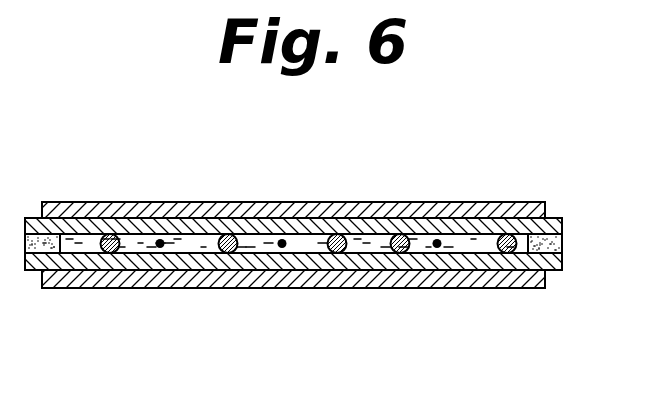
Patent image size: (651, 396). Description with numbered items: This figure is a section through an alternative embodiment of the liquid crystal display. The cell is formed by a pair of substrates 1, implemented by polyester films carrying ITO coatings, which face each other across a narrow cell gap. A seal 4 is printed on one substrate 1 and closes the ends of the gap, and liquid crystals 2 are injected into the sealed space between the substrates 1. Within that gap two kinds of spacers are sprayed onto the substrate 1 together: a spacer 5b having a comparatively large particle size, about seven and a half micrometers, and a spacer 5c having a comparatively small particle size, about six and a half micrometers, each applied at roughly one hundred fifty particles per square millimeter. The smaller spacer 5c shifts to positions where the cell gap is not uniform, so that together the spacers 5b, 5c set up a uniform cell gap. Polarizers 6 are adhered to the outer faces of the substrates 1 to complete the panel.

The substrate 1 is at (562, 218).
The liquid crystals 2 is at (412, 222).
The seal 4 is at (562, 241).
The spacer 5b is at (110, 234).
The spacer 5c is at (162, 239).
The polarizer 6 is at (540, 203).